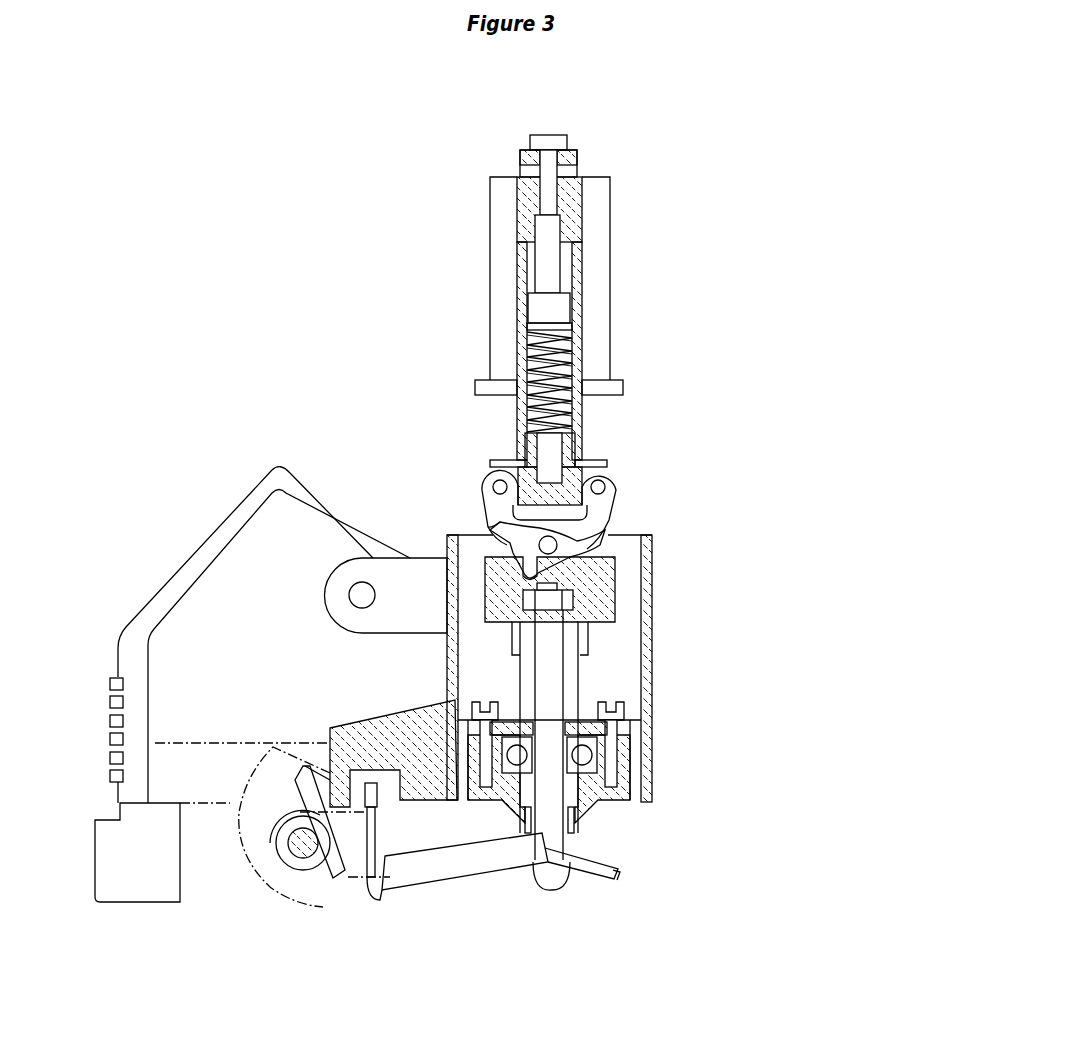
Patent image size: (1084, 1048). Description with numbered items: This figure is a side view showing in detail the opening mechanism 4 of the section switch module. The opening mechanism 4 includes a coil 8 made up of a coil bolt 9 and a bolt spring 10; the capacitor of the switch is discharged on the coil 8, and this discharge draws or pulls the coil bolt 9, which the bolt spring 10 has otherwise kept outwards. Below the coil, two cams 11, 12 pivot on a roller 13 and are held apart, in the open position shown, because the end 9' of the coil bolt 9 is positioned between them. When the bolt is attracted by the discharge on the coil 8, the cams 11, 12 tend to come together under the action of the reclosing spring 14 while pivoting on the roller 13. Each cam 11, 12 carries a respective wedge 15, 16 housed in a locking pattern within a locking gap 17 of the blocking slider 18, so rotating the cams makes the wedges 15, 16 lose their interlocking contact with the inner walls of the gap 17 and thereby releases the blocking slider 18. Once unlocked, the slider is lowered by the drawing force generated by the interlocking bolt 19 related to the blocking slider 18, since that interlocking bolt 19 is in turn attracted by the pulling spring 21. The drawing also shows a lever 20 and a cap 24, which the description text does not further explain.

The actuator assembly 4 is at (737, 854).
The cylinder housing 8 is at (506, 255).
The guide sleeve 9 is at (645, 305).
The lower guide block 9' is at (628, 438).
The compression spring 10 is at (548, 348).
The pivot lug 11 is at (498, 509).
The yoke 12 is at (606, 506).
The link 13 is at (544, 542).
The pivot pin 14 is at (568, 547).
The lever arm 15 is at (529, 567).
The bearing block 16 is at (572, 559).
The mounting bracket 17 is at (511, 582).
The shaft 18 is at (579, 631).
The hub 19 is at (555, 876).
The lever 20 is at (473, 869).
The cam 21 is at (333, 861).
The cap 24 is at (569, 133).